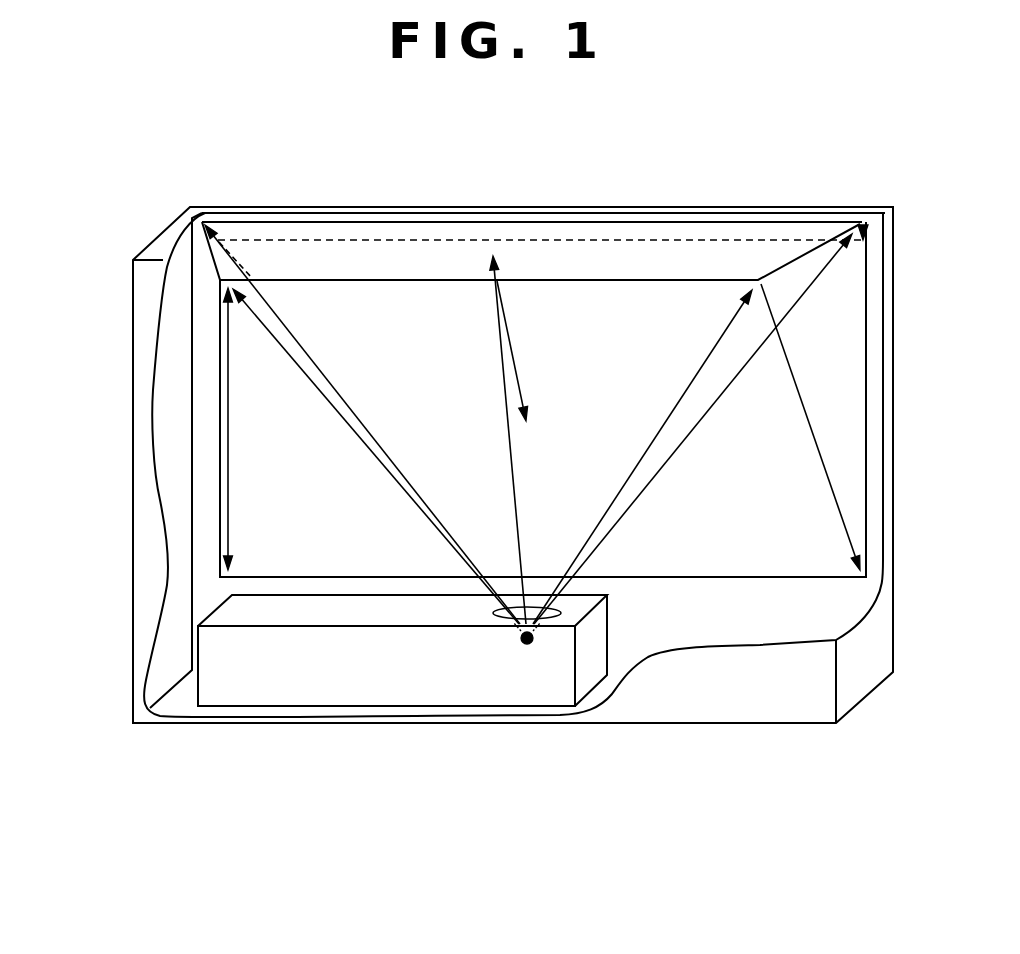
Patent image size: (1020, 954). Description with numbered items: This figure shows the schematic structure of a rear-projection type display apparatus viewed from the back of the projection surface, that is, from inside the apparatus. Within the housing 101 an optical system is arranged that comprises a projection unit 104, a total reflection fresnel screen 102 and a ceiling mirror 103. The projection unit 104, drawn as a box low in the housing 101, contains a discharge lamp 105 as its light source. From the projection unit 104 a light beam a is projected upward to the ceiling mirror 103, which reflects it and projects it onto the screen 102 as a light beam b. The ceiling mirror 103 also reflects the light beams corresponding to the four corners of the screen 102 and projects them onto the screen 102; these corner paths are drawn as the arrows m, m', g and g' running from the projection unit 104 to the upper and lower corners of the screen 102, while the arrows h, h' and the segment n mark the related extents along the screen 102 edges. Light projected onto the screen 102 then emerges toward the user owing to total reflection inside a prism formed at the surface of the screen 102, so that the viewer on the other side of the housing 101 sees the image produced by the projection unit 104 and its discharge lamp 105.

The housing 101 is at (777, 695).
The total reflection fresnel screen 102 is at (243, 404).
The ceiling mirror 103 is at (742, 257).
The projection unit 104 is at (398, 678).
The discharge lamp 105 is at (528, 645).
The light beam a is at (512, 470).
The light beam b is at (518, 376).
The distance g is at (642, 457).
The distance g' is at (376, 456).
The distance h is at (810, 427).
The distance h' is at (256, 429).
The distance m is at (693, 429).
The distance m' is at (362, 424).
The distance n is at (827, 266).